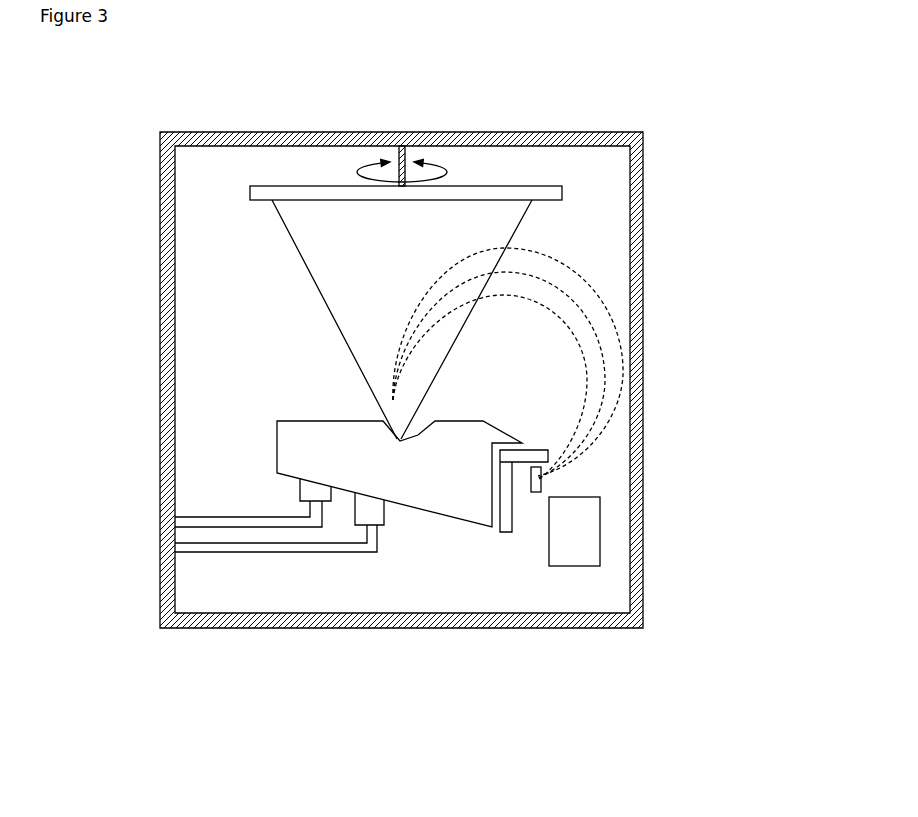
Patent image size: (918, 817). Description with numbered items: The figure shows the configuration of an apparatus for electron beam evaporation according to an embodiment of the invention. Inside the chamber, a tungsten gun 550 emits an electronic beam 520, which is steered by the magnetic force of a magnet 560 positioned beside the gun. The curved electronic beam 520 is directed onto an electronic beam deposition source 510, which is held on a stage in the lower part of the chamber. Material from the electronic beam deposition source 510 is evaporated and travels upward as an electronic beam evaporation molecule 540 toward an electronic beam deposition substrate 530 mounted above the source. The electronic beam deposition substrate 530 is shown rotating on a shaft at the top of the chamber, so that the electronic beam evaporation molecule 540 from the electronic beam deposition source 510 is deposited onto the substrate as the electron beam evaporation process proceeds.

The electronic beam deposition source 510 is at (442, 472).
The electronic beam 520 is at (583, 298).
The electronic beam deposition substrate 530 is at (505, 186).
The electronic beam evaporation molecule 540 is at (327, 266).
The tungsten gun 550 is at (522, 481).
The magnet 560 is at (600, 528).